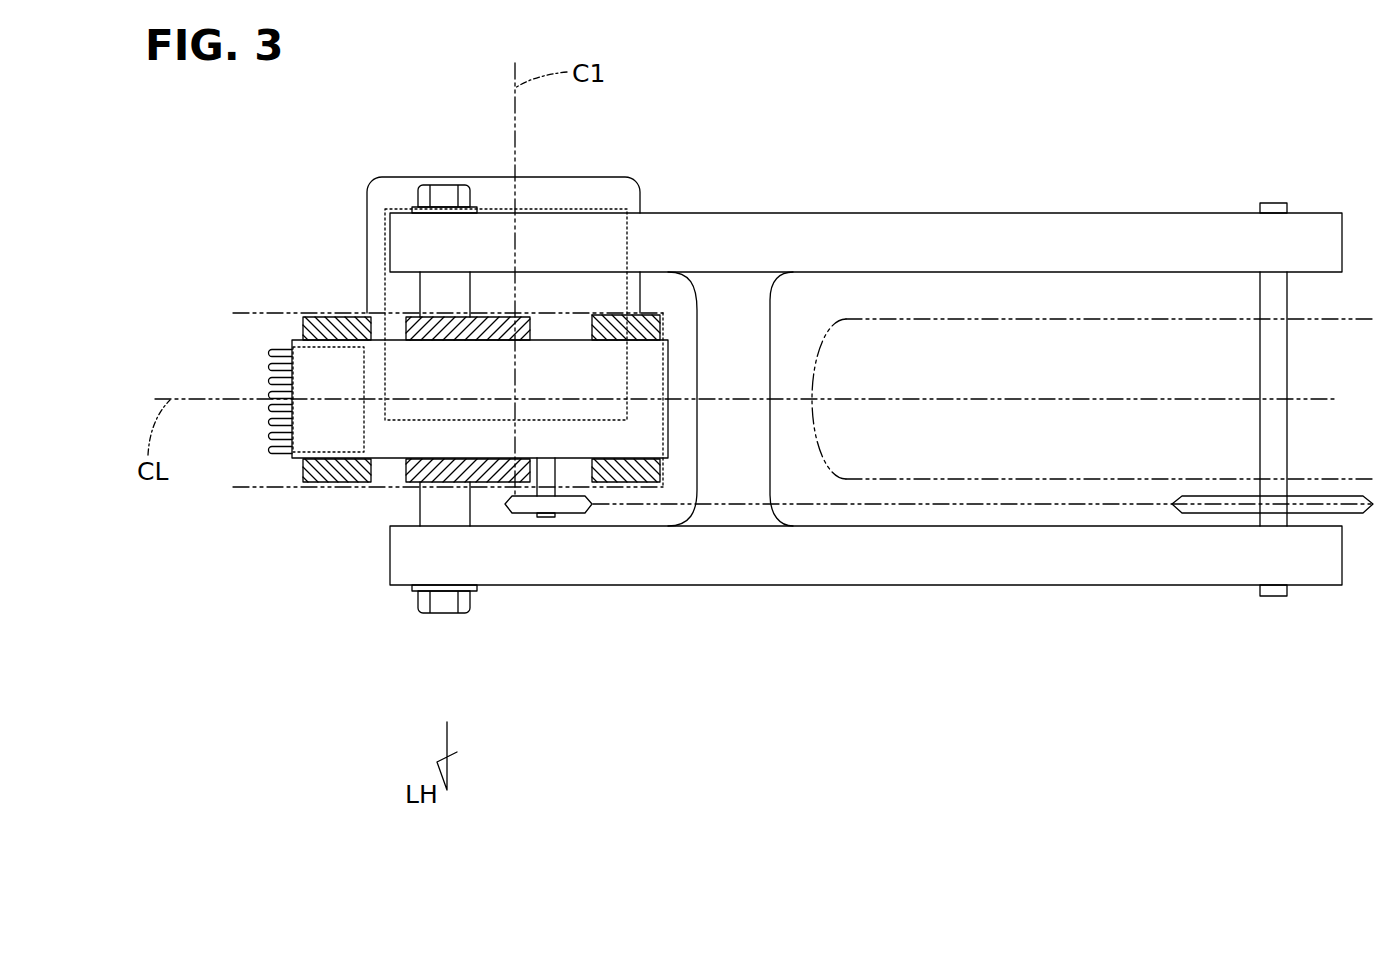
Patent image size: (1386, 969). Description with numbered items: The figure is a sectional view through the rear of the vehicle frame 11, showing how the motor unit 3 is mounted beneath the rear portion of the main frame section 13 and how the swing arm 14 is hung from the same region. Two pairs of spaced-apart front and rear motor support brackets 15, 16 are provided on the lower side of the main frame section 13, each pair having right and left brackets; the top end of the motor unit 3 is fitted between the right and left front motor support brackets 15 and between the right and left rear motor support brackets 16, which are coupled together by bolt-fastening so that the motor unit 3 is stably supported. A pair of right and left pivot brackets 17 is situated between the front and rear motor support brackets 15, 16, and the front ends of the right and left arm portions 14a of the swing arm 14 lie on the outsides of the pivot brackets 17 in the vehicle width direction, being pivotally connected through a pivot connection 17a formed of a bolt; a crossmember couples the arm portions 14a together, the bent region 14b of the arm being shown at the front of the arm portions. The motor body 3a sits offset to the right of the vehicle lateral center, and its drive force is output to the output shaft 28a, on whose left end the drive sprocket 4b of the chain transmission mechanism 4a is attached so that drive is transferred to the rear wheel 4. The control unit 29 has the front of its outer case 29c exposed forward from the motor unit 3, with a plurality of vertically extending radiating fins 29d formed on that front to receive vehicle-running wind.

The motor unit 3 is at (586, 312).
The motor body 3a is at (594, 210).
The rear wheel 4 is at (946, 319).
The chain transmission mechanism 4a is at (925, 516).
The drive sprocket 4b is at (565, 510).
The frame 11 is at (407, 400).
The main frame section 13 is at (238, 313).
The swing arm 14 is at (737, 596).
The arm portions 14a is at (778, 240).
The arm bent portion 14b is at (758, 438).
The front motor support brackets 15 is at (318, 317).
The rear motor support brackets 16 is at (650, 313).
The pivot brackets 17 is at (418, 330).
The pivot connection 17a is at (443, 186).
The output shaft 28a is at (547, 490).
The control unit 29 is at (237, 379).
The outer case 29c is at (264, 345).
The radiating fins 29d is at (270, 392).